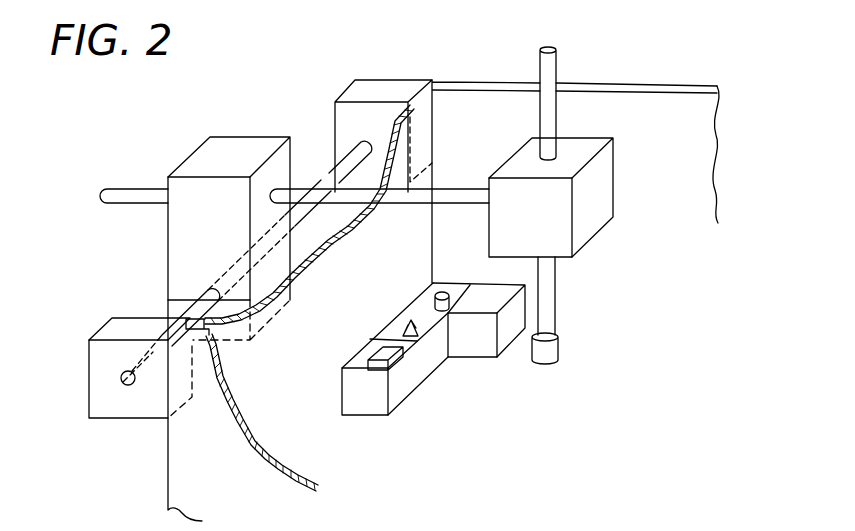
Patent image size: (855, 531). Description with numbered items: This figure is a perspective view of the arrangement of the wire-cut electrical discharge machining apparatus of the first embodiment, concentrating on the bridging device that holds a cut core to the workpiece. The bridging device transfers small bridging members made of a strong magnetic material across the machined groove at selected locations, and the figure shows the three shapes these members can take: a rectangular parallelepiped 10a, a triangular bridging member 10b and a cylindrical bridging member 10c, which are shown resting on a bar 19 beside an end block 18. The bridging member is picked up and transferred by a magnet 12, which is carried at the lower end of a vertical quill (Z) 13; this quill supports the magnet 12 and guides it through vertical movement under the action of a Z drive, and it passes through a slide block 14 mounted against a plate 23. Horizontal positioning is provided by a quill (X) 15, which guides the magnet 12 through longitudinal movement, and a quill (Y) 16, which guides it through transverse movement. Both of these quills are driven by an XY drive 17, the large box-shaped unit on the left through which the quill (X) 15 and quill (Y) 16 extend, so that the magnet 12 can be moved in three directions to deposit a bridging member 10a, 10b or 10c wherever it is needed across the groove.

The rectangular parallelepiped bridging member 10a is at (382, 355).
The triangular bridging member 10b is at (405, 323).
The cylindrical bridging member 10c is at (435, 293).
The magnet 12 is at (550, 352).
The quill (Z) 13 is at (550, 70).
The slide block 14 is at (598, 178).
The quill (X) 15 is at (122, 188).
The quill (Y) 16 is at (330, 180).
The XY drive 17 is at (202, 163).
The end block 18 is at (488, 295).
The rail bar 19 is at (373, 398).
The mounting plate 23 is at (653, 117).